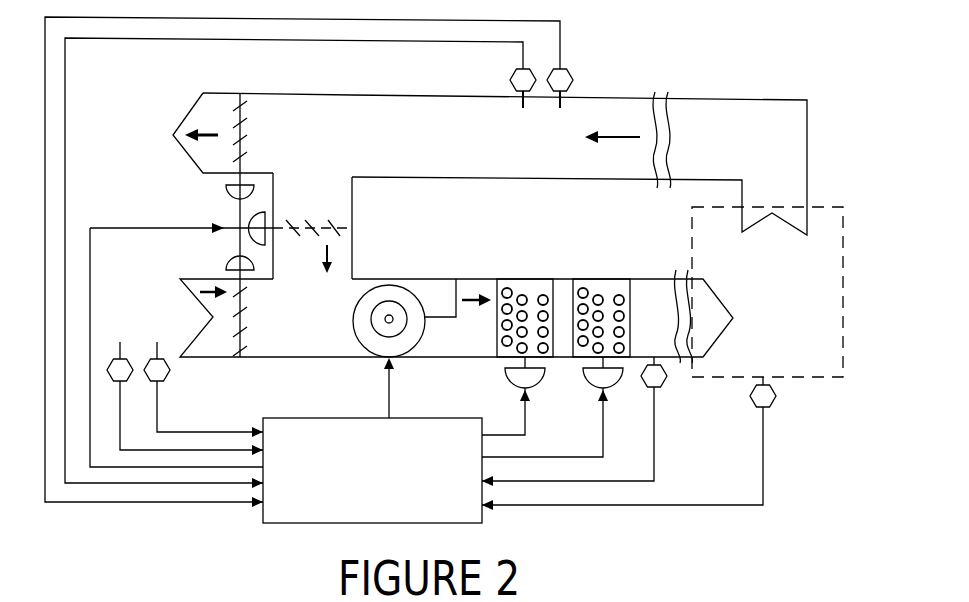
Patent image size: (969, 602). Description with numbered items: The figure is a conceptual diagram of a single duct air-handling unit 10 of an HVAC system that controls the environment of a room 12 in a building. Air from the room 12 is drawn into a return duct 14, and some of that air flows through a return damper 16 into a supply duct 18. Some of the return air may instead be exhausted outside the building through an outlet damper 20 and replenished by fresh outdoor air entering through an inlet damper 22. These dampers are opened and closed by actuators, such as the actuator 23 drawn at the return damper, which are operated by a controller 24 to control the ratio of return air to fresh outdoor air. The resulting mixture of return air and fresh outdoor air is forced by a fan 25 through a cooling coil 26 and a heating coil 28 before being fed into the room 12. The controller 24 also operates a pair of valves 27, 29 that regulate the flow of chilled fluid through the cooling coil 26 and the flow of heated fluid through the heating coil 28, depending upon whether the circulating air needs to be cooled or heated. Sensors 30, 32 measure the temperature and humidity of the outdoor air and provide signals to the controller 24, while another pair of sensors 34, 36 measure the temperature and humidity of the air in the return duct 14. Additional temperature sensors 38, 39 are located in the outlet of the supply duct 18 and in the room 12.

The air-handling unit 10 is at (646, 61).
The room 12 is at (773, 322).
The return duct 14 is at (672, 183).
The return damper 16 is at (346, 228).
The supply duct 18 is at (565, 278).
The outlet damper 20 is at (246, 143).
The inlet damper 22 is at (248, 326).
The damper actuator 23 is at (216, 213).
The controller 24 is at (386, 510).
The fan 25 is at (390, 288).
The cooling coil 26 is at (540, 285).
The valve 27 is at (514, 380).
The heating coil 28 is at (625, 278).
The valve 29 is at (590, 378).
The sensor 30 is at (125, 358).
The sensor 32 is at (172, 378).
The sensor 34 is at (511, 80).
The sensor 36 is at (574, 76).
The temperature sensor 38 is at (665, 388).
The temperature sensor 39 is at (775, 407).